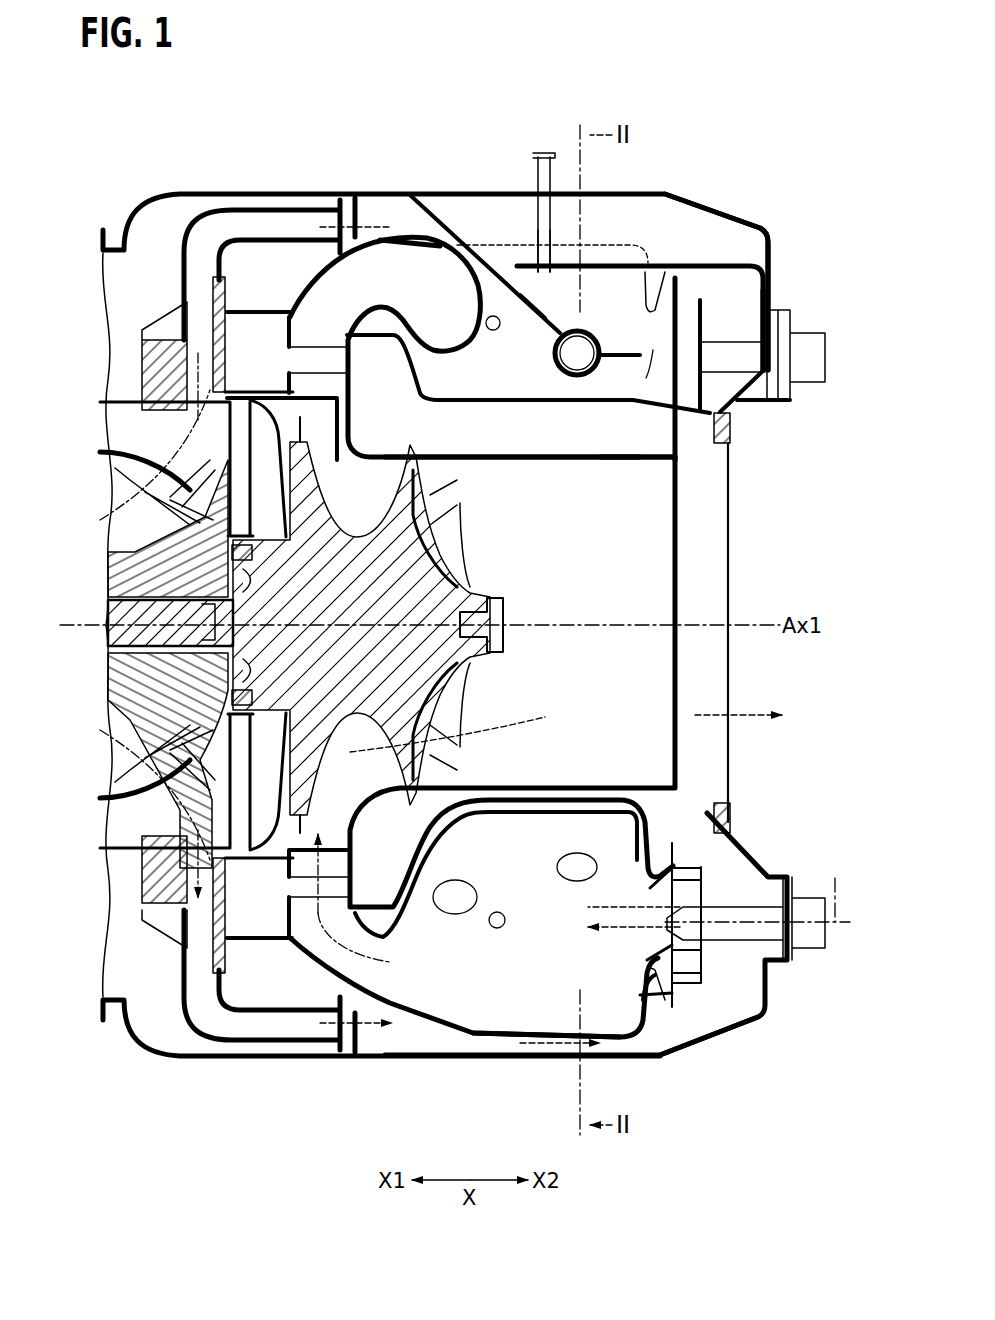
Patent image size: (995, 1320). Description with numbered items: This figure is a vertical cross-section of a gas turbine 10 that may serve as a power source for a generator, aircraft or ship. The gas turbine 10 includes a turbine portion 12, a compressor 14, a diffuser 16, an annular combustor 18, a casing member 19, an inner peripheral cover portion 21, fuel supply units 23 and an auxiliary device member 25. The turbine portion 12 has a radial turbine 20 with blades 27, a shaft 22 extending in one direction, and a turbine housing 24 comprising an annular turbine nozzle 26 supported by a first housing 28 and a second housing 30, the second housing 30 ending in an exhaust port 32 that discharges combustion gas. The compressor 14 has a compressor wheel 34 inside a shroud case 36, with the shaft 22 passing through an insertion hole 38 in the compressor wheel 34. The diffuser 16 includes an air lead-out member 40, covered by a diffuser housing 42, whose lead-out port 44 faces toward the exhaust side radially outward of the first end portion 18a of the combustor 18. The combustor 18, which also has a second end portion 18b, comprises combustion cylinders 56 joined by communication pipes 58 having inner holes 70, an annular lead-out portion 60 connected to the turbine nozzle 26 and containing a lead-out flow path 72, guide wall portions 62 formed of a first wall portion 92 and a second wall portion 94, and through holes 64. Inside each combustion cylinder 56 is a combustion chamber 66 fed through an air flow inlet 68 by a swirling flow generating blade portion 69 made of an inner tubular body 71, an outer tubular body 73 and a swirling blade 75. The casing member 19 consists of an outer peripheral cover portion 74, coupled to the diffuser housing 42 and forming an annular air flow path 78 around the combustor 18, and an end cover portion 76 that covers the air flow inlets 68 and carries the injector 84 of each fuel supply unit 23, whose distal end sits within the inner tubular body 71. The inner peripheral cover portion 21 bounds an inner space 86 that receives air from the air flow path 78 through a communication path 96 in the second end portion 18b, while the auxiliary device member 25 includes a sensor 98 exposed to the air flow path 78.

The gas turbine 10 is at (194, 94).
The turbine portion 12 is at (692, 510).
The compressor 14 is at (93, 522).
The diffuser 16 is at (128, 185).
The combustor 18 is at (690, 828).
The first end portion 18a is at (319, 265).
The second end portion 18b is at (755, 388).
The casing member 19 is at (735, 252).
The turbine 20 is at (478, 597).
The inner peripheral cover portion 21 is at (690, 418).
The shaft 22 is at (108, 617).
The fuel supply unit 23 is at (798, 318).
The turbine housing 24 is at (605, 460).
The auxiliary device member 25 is at (544, 251).
The turbine nozzle 26 is at (322, 356).
The blades 27 is at (420, 745).
The first housing 28 is at (120, 392).
The second housing 30 is at (538, 456).
The exhaust port 32 is at (680, 568).
The compressor wheel 34 is at (125, 567).
The shroud case 36 is at (115, 467).
The insertion hole 38 is at (108, 633).
The air lead-out member 40 is at (246, 207).
The diffuser housing 42 is at (206, 190).
The lead-out port 44 is at (335, 226).
The combustion cylinders 56 is at (650, 278).
The communication pipes 58 is at (585, 378).
The annular lead-out portion 60 is at (422, 237).
The guide wall portions 62 is at (500, 268).
The through holes 64 is at (494, 328).
The combustion chamber 66 is at (612, 1000).
The air flow inlet 68 is at (712, 960).
The swirling flow generating blade portion 69 is at (682, 990).
The inner hole 70 is at (573, 350).
The inner tubular body 71 is at (660, 935).
The lead-out flow path 72 is at (330, 290).
The outer tubular body 73 is at (655, 950).
The outer peripheral cover portion 74 is at (612, 264).
The swirling blade 75 is at (690, 963).
The end cover portion 76 is at (772, 293).
The air flow path 78 is at (506, 1040).
The injector 84 is at (738, 345).
The inner space 86 is at (476, 380).
The first wall portion 92 is at (543, 322).
The second wall portion 94 is at (612, 352).
The communication path 96 is at (655, 352).
The sensor 98 is at (545, 150).